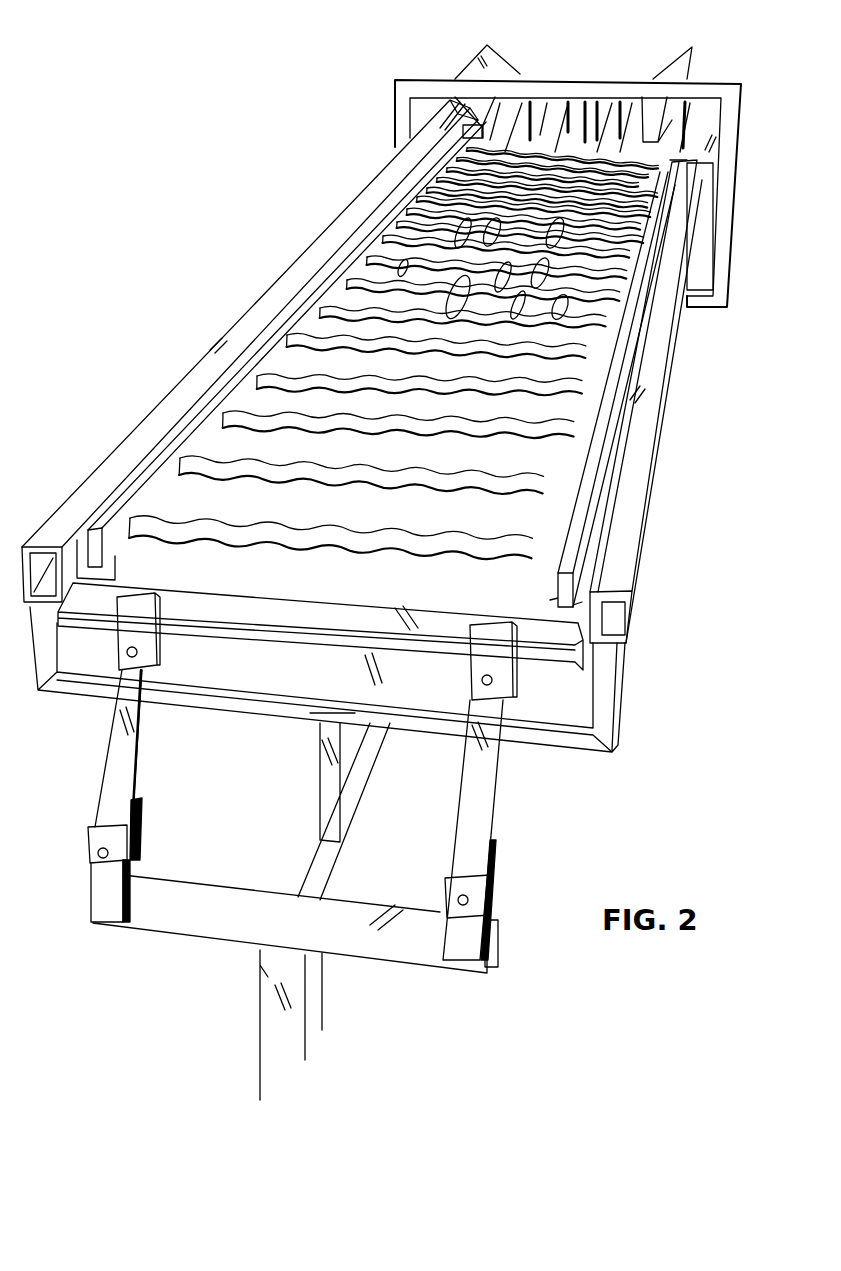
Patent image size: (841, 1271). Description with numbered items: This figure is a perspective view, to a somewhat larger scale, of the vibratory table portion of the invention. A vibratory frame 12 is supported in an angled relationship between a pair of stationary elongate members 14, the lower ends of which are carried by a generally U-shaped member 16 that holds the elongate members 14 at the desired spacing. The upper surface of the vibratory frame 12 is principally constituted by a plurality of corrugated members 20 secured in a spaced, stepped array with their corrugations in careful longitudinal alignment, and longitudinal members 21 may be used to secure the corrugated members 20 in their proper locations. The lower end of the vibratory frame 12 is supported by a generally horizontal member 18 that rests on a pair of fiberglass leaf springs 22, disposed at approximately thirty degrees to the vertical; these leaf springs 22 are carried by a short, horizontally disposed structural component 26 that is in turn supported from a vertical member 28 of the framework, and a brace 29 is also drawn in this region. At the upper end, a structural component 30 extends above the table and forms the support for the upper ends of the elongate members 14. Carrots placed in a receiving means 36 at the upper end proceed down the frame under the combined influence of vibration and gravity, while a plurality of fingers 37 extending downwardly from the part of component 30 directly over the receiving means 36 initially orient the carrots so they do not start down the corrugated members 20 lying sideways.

The vibratory frame 12 is at (368, 385).
The stationary elongate members 14 is at (217, 357).
The U-shaped member 16 is at (607, 695).
The horizontal member 18 is at (343, 613).
The corrugated members 20 is at (567, 487).
The longitudinal members 21 is at (127, 493).
The fiberglass leaf springs 22 is at (117, 773).
The structural component 26 is at (400, 950).
The vertical member 28 is at (270, 1037).
The brace post 29 is at (323, 790).
The structural component 30 is at (730, 187).
The receiving means 36 is at (547, 132).
The fingers 37 is at (590, 125).